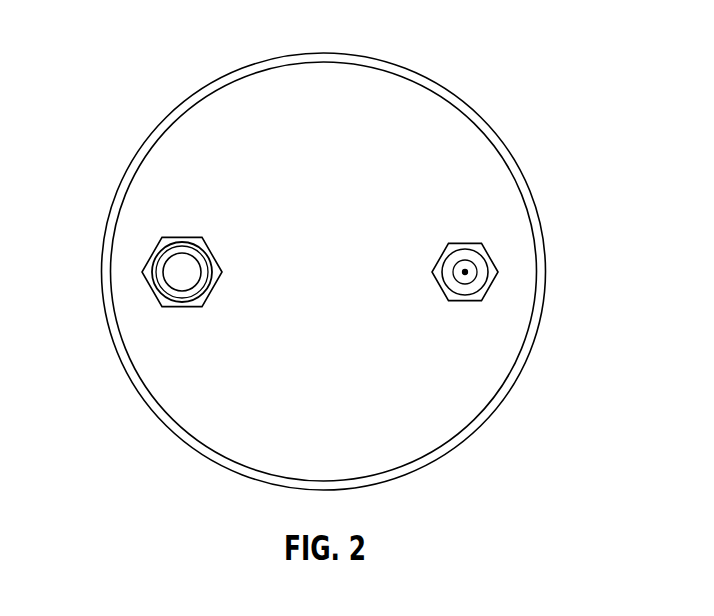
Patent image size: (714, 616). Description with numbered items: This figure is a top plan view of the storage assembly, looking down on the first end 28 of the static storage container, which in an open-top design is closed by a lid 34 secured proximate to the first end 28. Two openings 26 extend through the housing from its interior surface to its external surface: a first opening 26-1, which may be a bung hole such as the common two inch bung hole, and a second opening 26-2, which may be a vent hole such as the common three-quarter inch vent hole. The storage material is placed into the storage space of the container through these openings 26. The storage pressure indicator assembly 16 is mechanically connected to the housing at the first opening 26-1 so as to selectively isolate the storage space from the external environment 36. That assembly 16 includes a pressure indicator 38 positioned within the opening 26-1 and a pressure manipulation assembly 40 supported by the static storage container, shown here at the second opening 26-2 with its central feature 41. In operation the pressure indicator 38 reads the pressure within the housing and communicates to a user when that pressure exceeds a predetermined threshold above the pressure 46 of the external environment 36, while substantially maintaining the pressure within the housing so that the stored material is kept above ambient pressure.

The storage pressure indicator assembly 16 is at (188, 224).
The opening 26 is at (147, 232).
The first opening 26-1 is at (133, 268).
The second opening 26-2 is at (507, 270).
The first end 28 is at (448, 128).
The lid 34 is at (322, 83).
The external environment 36 is at (178, 92).
The pressure indicator 38 is at (182, 272).
The pressure manipulation assembly 40 is at (488, 232).
The orifice 41 is at (464, 273).
The pressure of the external environment 46 is at (463, 55).